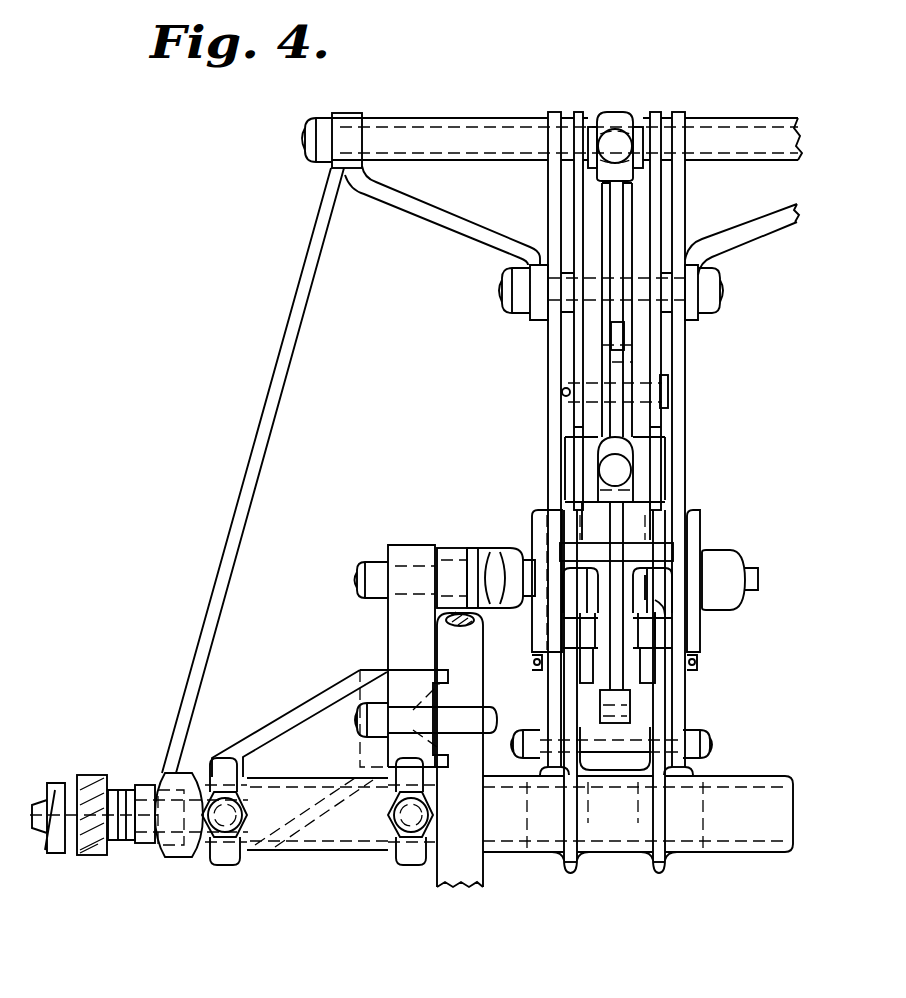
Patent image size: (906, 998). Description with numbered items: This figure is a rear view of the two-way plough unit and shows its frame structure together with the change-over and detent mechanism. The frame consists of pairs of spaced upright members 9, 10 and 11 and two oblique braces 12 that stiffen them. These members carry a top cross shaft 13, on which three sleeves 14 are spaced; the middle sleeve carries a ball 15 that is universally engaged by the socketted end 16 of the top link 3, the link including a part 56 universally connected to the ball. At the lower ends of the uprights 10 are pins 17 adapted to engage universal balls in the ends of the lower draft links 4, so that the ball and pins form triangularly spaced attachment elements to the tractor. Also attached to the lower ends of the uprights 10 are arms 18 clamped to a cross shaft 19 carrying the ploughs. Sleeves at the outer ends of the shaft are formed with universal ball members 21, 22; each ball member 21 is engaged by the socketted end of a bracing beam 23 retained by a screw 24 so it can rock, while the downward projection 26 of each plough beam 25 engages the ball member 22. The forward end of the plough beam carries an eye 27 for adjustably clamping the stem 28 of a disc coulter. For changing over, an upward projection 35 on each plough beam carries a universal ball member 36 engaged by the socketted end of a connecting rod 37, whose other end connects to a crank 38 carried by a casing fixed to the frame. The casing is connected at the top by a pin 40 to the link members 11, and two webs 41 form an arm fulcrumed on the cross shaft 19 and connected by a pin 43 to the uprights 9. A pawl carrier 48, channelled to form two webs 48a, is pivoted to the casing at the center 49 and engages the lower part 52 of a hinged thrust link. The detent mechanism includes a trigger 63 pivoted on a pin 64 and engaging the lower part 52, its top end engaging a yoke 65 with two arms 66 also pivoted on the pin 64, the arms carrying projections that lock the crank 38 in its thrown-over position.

The top link 3 is at (626, 333).
The lower draft link 4 is at (102, 843).
The upright member 9 is at (578, 410).
The upright member 10 is at (290, 350).
The upright member 11 is at (581, 188).
The oblique brace 12 is at (463, 213).
The top cross shaft 13 is at (758, 163).
The sleeve 14 is at (503, 113).
The ball 15 is at (644, 123).
The socketted end 16 is at (620, 111).
The pin 17 is at (147, 788).
The arm 18 is at (183, 856).
The cross shaft 19 is at (779, 784).
The universal ball member 21 is at (238, 846).
The universal ball member 22 is at (426, 878).
The bracing beam 23 is at (301, 725).
The screw 24 is at (240, 850).
The plough beam 25 is at (408, 671).
The downward projection 26 is at (395, 856).
The eye 27 is at (473, 726).
The stem 28 is at (477, 670).
The upward projection 35 is at (404, 519).
The universal ball member 36 is at (457, 519).
The connecting rod 37 is at (507, 521).
The crank 38 is at (702, 526).
The pin 40 is at (567, 383).
The web 41 is at (661, 738).
The pin 43 is at (701, 746).
The pawl carrier 48 is at (652, 862).
The web 48a is at (592, 862).
The center pivot 49 is at (671, 644).
The lower part of thrust link 52 is at (618, 501).
The part of upper link 56 is at (621, 208).
The trigger 63 is at (651, 598).
The pin 64 is at (663, 704).
The yoke 65 is at (653, 509).
The arm 66 is at (542, 631).